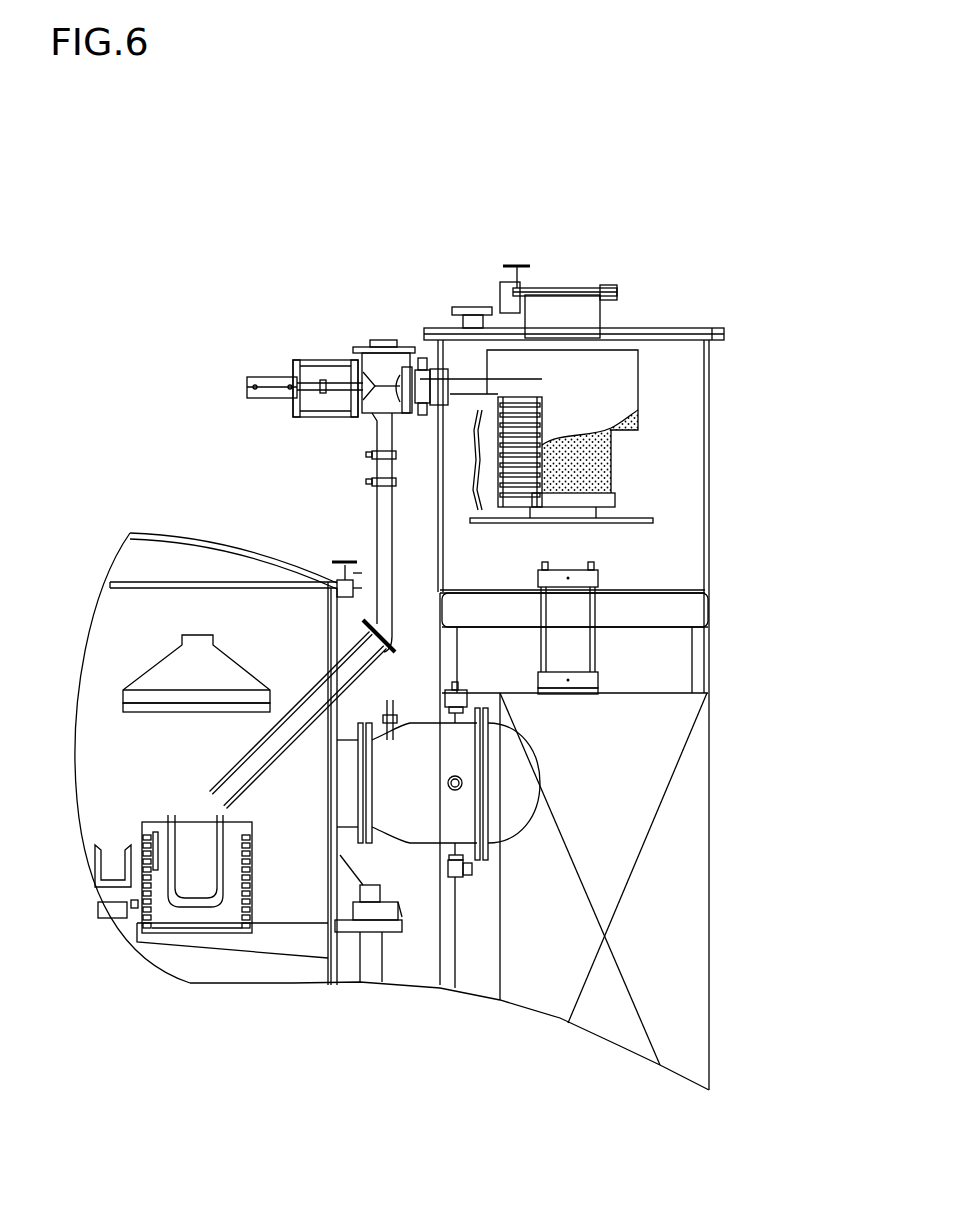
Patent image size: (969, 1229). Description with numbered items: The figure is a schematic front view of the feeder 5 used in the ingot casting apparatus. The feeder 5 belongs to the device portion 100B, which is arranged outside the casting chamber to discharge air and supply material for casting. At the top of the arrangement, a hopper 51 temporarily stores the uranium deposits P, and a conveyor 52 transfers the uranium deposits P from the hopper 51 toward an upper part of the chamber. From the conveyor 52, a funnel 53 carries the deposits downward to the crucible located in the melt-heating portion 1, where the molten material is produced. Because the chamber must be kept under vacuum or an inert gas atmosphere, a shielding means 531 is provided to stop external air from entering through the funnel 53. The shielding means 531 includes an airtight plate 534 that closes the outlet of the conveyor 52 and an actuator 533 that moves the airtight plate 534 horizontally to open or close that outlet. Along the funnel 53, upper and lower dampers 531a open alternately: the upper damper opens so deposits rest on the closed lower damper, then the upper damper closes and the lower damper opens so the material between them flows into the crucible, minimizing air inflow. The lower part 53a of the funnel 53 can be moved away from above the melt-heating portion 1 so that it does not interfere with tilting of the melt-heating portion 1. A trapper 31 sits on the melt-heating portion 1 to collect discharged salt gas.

The feeder 5 is at (574, 256).
The hopper 51 is at (620, 350).
The conveyor 52 is at (537, 423).
The uranium deposits P is at (600, 467).
The device portion 100B is at (718, 659).
The shielding means 531 is at (156, 316).
The airtight plate 534 is at (363, 357).
The actuator 533 is at (273, 378).
The dampers 531a is at (377, 449).
The funnel 53 is at (386, 533).
The lower part of the funnel 53a is at (263, 763).
The trapper 31 is at (150, 680).
The melt-heating portion 1 is at (192, 940).